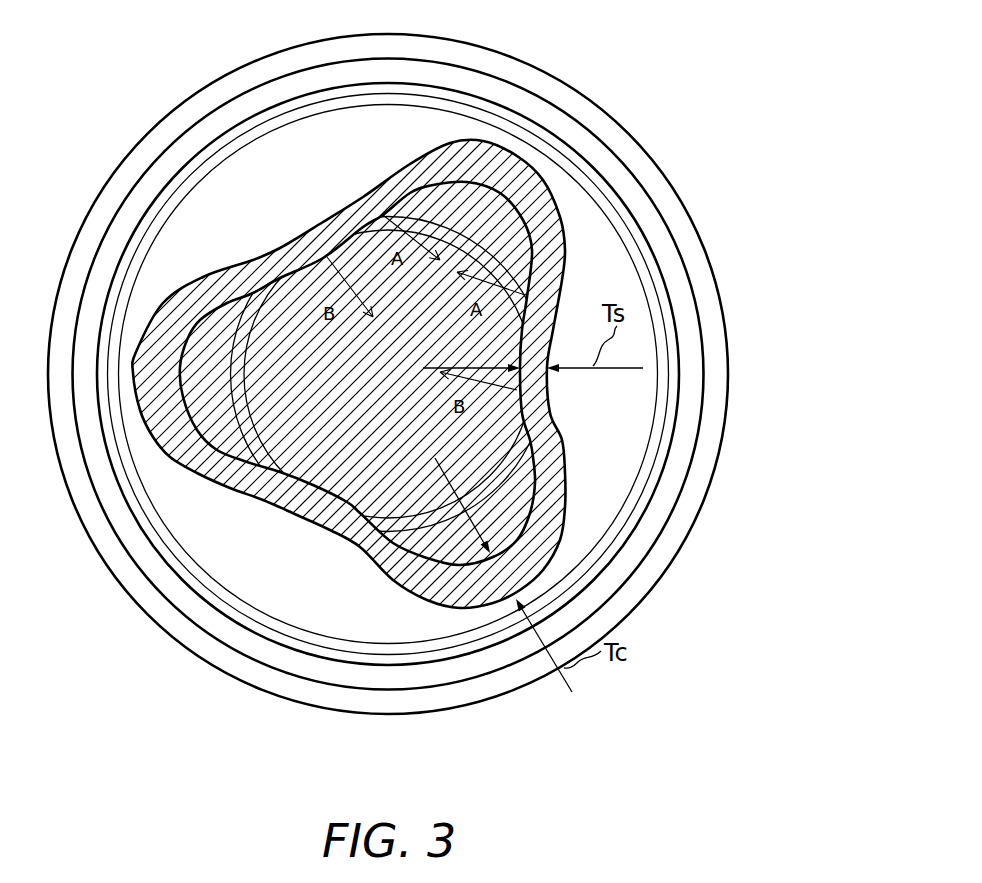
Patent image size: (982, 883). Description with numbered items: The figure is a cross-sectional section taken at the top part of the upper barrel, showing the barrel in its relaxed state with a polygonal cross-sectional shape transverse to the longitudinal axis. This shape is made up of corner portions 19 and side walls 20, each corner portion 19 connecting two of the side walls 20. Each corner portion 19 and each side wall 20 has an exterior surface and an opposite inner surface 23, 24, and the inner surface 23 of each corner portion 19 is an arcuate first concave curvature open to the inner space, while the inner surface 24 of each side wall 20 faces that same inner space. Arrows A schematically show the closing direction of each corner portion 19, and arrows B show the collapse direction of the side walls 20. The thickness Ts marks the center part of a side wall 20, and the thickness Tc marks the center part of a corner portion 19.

The corner portion 19 is at (500, 170).
The side wall 20 is at (327, 245).
The inner surface of corner portion 23 is at (489, 189).
The inner surface of side wall 24 is at (323, 493).